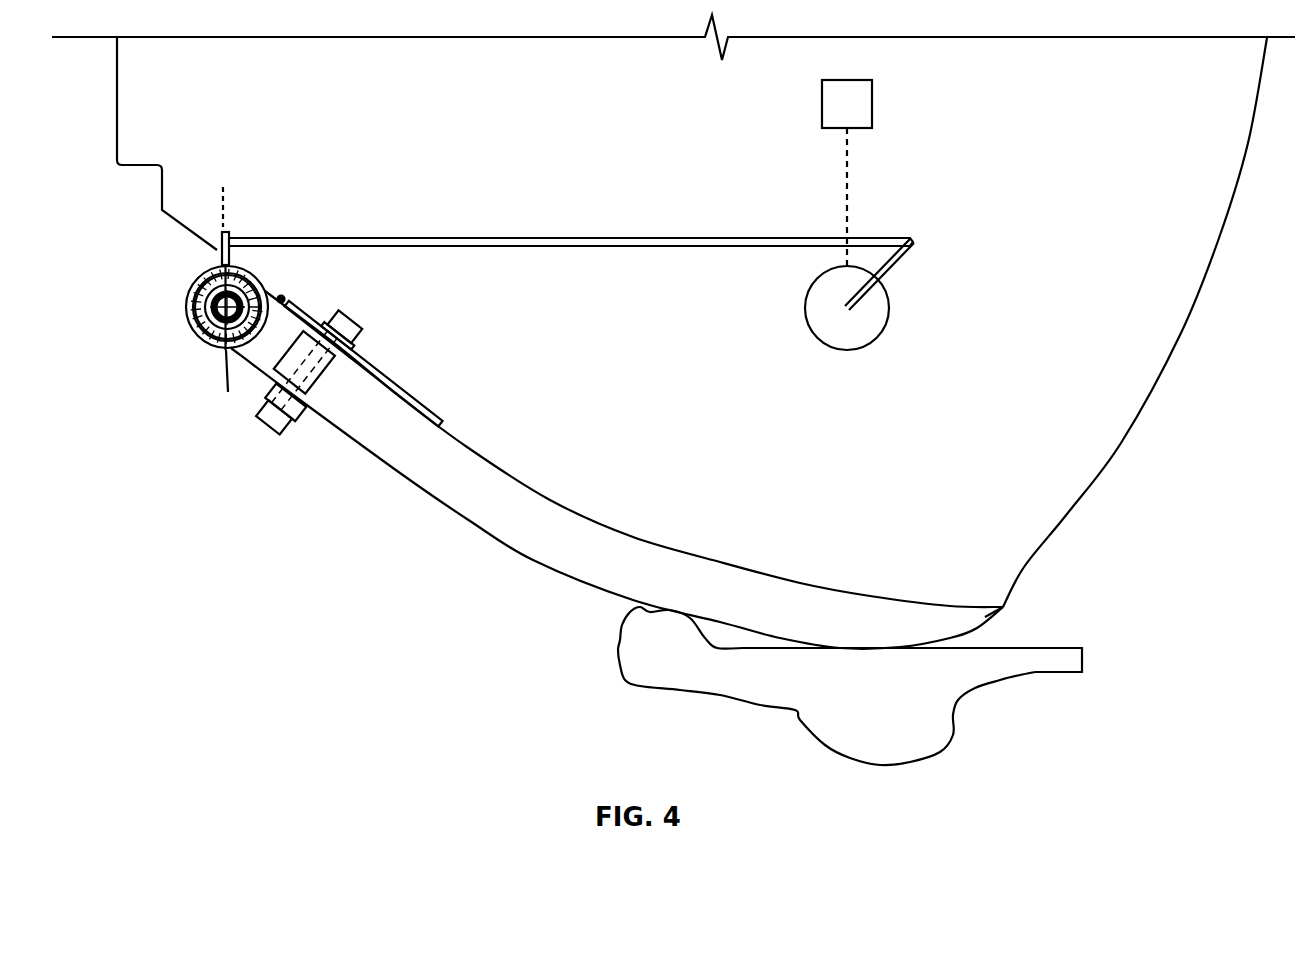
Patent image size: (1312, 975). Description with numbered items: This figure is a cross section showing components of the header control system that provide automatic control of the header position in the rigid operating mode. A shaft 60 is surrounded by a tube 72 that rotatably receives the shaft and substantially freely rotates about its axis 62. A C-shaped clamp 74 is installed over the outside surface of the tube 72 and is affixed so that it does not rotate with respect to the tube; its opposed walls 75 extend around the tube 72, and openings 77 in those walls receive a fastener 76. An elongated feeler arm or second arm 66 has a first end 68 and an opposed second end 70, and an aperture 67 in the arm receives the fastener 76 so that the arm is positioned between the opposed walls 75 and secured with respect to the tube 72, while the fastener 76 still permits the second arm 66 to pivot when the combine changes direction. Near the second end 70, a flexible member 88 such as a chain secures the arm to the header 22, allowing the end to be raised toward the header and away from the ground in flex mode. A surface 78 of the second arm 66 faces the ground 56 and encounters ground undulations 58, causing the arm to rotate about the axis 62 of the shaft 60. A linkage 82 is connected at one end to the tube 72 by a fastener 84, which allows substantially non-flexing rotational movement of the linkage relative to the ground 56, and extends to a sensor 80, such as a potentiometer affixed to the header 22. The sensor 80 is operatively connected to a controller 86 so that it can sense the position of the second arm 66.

The header 22 is at (533, 131).
The ground 56 is at (1080, 648).
The ground undulations 58 is at (620, 640).
The shaft 60 is at (190, 297).
The axis 62 is at (182, 308).
The second arm 66 is at (647, 536).
The aperture 67 is at (307, 392).
The first end 68 is at (247, 360).
The second end 70 is at (978, 632).
The tube 72 is at (203, 270).
The clamp 74 is at (230, 353).
The opposed walls 75 is at (273, 297).
The fastener 76 is at (350, 312).
The openings 77 is at (353, 340).
The surface 78 is at (412, 482).
The sensor 80 is at (888, 318).
The linkage 82 is at (605, 268).
The fastener 84 is at (225, 230).
The controller 86 is at (834, 118).
The flexible member 88 is at (1122, 444).